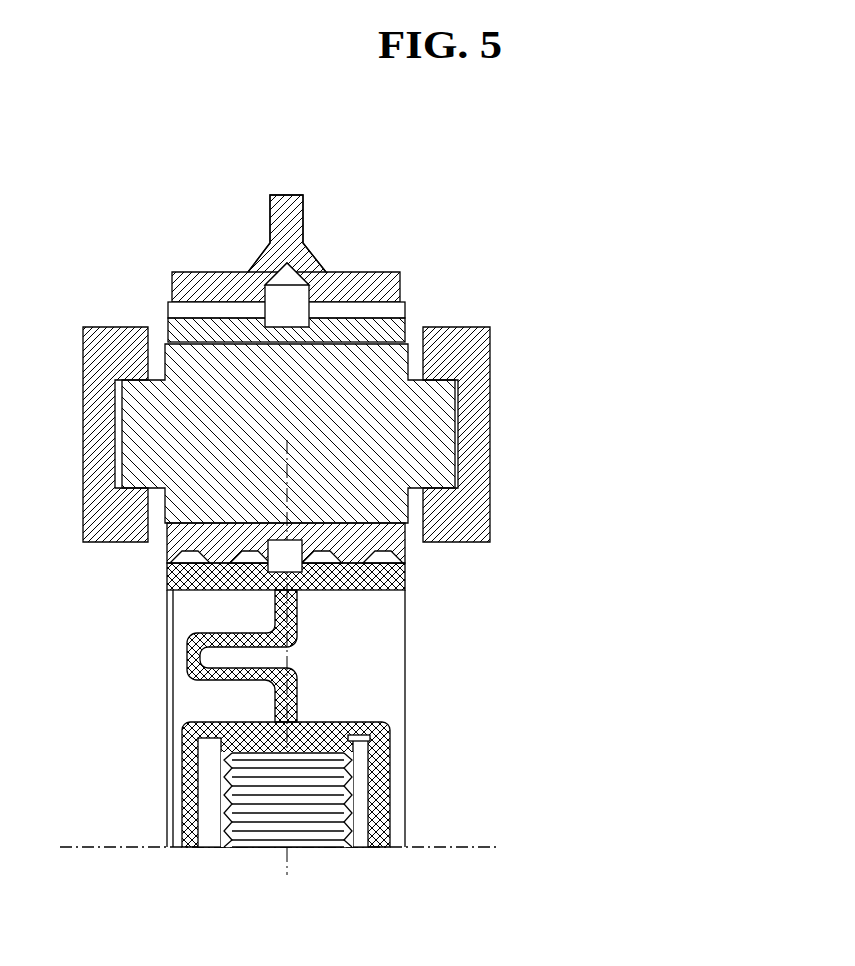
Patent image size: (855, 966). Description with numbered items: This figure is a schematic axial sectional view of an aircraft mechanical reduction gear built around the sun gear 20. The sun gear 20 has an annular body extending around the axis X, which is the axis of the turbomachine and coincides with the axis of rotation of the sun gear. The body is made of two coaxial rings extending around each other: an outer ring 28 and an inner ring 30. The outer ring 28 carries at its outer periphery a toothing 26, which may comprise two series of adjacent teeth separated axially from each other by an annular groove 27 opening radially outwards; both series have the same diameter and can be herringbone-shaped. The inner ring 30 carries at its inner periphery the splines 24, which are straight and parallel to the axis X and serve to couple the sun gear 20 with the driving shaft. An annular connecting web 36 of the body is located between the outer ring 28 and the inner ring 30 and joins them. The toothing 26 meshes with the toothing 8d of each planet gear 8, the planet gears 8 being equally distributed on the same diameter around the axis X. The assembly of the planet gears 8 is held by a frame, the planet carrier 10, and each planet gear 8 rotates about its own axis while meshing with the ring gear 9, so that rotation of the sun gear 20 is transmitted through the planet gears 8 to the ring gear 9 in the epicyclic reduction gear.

The planet gear 8 is at (392, 337).
The ring gear 9 is at (352, 286).
The planet carrier 10 is at (492, 338).
The toothing of planet gear 8d is at (229, 545).
The toothing 26 is at (168, 569).
The annular groove 27 is at (303, 548).
The outer ring 28 is at (406, 597).
The sun gear 20 is at (291, 651).
The annular connecting web 36 is at (181, 646).
The inner ring 30 is at (255, 828).
The splines 24 is at (336, 833).
The axis of rotation X is at (484, 846).